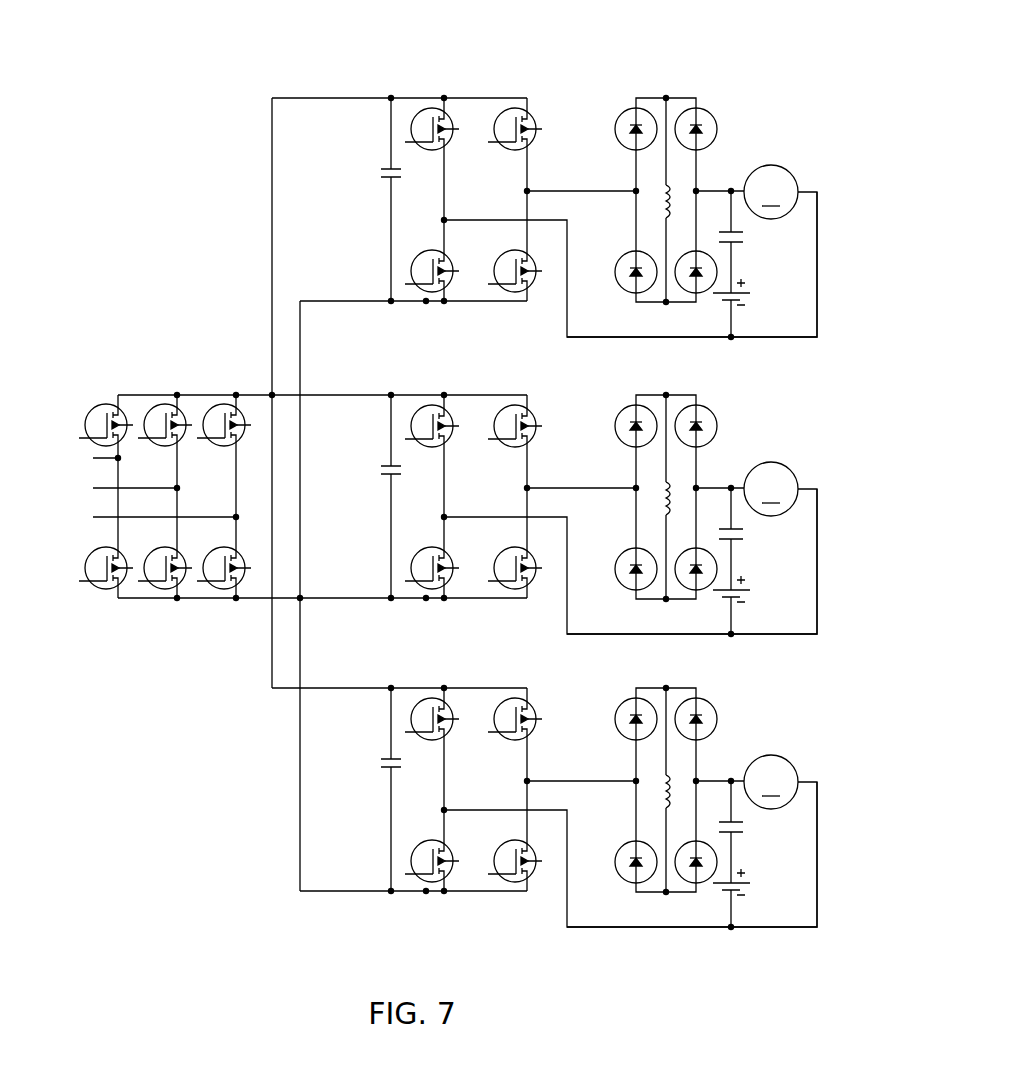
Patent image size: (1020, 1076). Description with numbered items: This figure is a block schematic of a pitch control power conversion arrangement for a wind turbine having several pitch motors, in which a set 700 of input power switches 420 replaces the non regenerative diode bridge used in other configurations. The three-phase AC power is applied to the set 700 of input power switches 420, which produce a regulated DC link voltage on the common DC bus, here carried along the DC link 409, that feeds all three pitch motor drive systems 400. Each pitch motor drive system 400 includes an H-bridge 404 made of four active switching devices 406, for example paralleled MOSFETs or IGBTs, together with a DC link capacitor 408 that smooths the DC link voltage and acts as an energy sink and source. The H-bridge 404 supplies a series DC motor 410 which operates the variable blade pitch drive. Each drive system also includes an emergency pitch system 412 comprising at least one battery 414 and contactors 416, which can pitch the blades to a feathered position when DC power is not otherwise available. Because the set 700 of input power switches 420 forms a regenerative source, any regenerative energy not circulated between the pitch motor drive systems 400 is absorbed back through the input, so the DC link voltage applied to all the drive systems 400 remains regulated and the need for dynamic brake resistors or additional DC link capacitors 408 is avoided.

The pitch motor drive system 400 is at (630, 75).
The H-bridge 404 is at (462, 90).
The active switching devices 406 is at (508, 292).
The DC link capacitor 408 is at (382, 175).
The DC bus 409 is at (280, 270).
The series DC motor 410 is at (781, 168).
The emergency pitch system 412 is at (745, 268).
The battery 414 is at (723, 305).
The contactors 416 is at (724, 232).
The input power switches 420 is at (218, 404).
The set of input power switches 700 is at (176, 378).